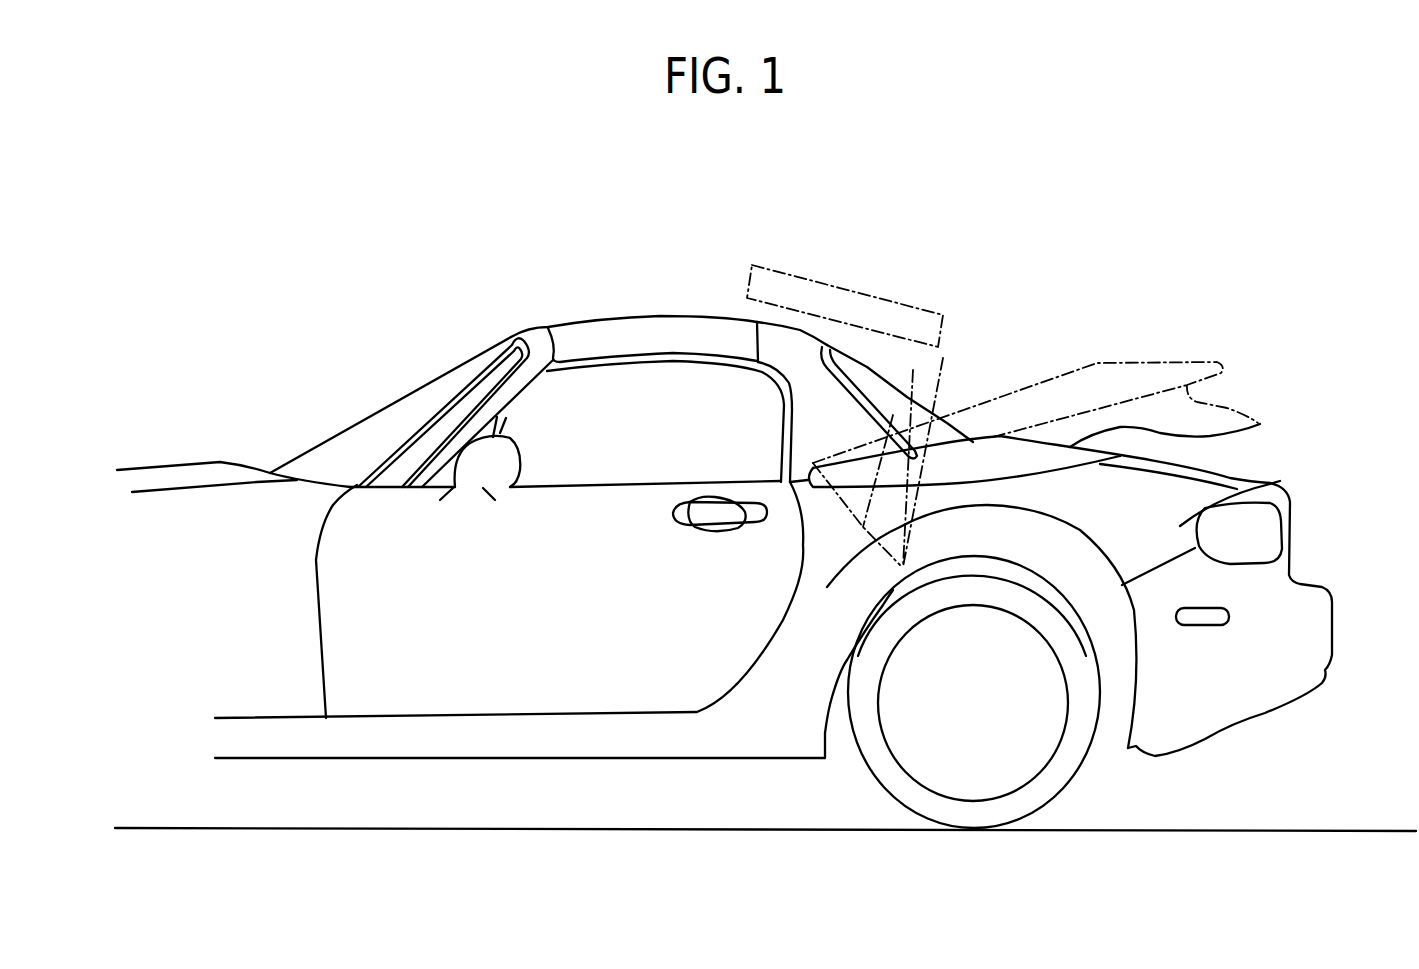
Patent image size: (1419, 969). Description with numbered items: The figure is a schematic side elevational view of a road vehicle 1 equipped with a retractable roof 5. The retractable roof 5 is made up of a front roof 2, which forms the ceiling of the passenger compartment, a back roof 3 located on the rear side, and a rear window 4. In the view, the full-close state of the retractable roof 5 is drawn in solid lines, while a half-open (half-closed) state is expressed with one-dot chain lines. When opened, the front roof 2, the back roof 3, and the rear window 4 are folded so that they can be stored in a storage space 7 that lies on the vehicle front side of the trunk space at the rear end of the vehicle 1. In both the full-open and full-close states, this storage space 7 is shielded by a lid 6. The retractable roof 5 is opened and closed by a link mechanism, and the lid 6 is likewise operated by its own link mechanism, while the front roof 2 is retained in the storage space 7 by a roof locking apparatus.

The vehicle 1 is at (765, 523).
The front roof 2 is at (686, 318).
The back roof 3 is at (943, 320).
The rear window 4 is at (903, 377).
The retractable roof 5 is at (758, 353).
The lid 6 is at (1048, 412).
The storage space 7 is at (850, 593).